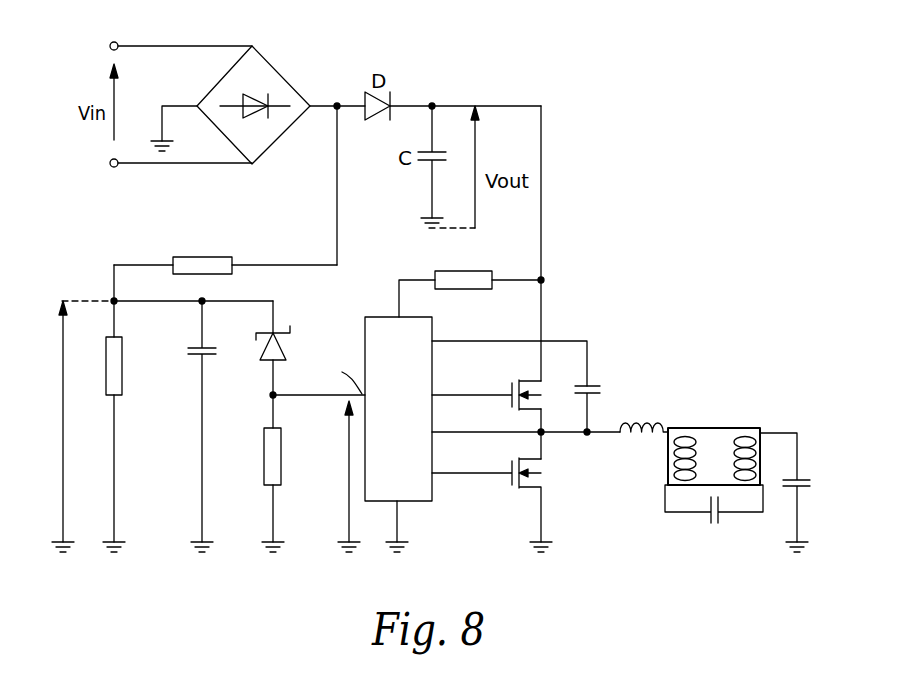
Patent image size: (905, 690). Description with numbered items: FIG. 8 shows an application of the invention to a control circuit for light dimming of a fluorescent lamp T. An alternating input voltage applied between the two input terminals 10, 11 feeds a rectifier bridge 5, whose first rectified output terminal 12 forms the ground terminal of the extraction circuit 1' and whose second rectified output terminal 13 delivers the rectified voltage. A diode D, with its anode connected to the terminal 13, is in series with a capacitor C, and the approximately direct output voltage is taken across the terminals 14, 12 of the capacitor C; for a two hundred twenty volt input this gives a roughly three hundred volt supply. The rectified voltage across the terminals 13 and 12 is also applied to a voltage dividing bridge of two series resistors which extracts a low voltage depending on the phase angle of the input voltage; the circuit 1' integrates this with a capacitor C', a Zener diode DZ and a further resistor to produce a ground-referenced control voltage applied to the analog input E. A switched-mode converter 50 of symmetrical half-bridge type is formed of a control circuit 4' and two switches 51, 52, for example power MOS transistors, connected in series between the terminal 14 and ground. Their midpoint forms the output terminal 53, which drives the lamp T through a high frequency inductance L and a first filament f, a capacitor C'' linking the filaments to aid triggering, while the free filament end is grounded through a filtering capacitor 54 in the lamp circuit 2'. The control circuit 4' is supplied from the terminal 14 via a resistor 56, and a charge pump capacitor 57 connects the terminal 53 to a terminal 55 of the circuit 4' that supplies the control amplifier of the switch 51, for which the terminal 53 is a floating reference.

The input terminal 10 is at (113, 41).
The input terminal 11 is at (112, 167).
The first rectified output terminal 12 is at (178, 106).
The bridge 5 is at (283, 78).
The second rectified output terminal 13 is at (339, 104).
The terminal 14 is at (434, 104).
The circuit 1' is at (191, 386).
The switched-mode converter 50 is at (489, 381).
The control circuit 4' is at (387, 414).
The resistor 56 is at (463, 271).
The terminal 55 is at (434, 343).
The charge pump capacitor 57 is at (591, 386).
The switch 51 is at (511, 400).
The switch 52 is at (511, 478).
The output terminal 53 is at (543, 435).
The resonant antenna circuit 2' is at (733, 446).
The capacitor 54 is at (804, 478).